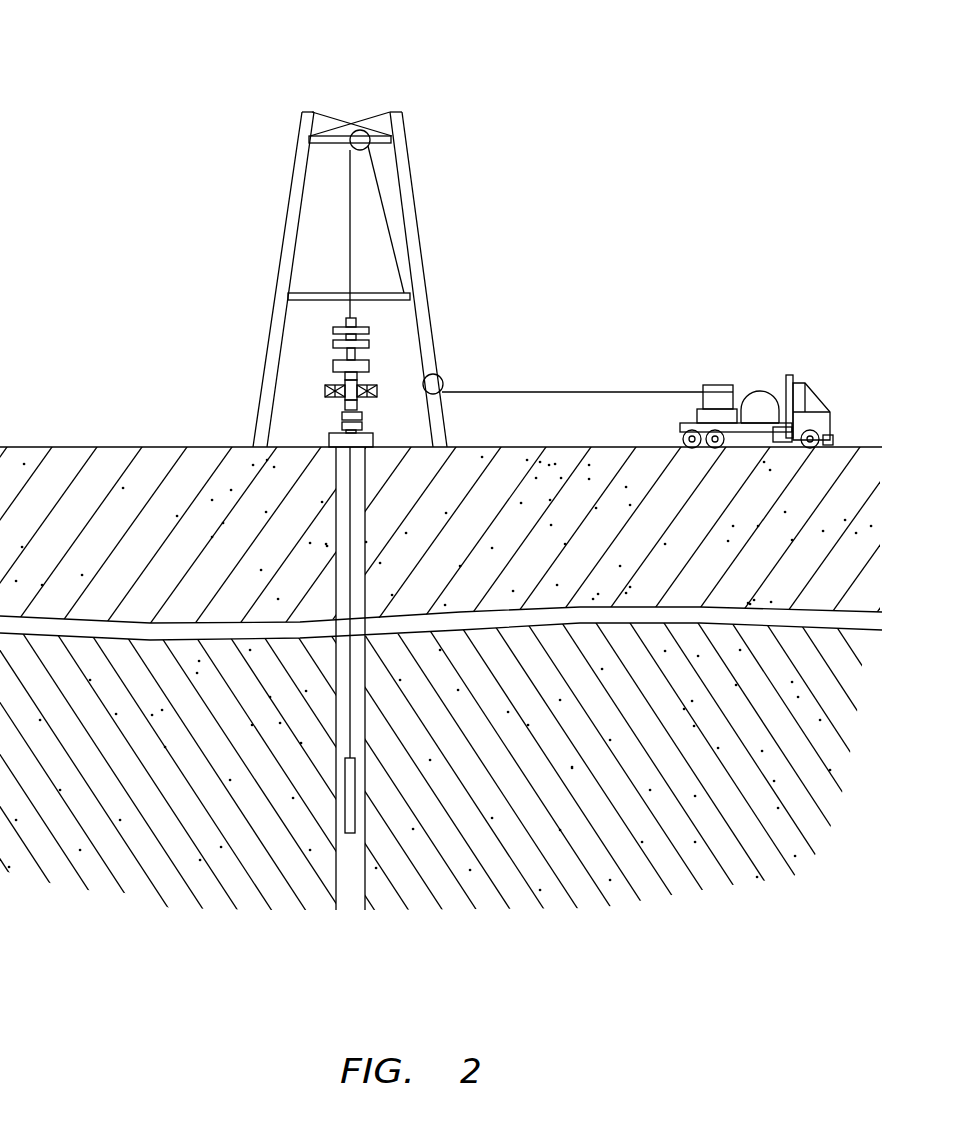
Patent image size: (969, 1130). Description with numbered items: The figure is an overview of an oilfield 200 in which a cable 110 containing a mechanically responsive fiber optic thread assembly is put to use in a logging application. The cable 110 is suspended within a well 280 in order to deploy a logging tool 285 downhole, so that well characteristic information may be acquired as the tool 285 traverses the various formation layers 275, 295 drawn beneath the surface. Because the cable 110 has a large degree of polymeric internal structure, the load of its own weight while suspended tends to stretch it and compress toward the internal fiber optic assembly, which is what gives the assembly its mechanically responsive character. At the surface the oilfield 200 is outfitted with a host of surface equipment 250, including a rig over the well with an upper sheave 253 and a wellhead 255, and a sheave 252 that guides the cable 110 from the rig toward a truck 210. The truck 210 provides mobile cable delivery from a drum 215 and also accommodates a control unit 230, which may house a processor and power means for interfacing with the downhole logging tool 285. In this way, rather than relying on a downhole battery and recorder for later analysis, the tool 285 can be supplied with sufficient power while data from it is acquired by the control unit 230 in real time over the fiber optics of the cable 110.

The surface equipment 250 is at (133, 62).
The crown sheave 253 is at (357, 130).
The wellhead stack 255 is at (316, 345).
The well 280 is at (341, 478).
The sheave 252 is at (442, 377).
The cable 110 is at (546, 392).
The control unit 230 is at (712, 385).
The drum 215 is at (757, 392).
The truck 210 is at (766, 372).
The oilfield 200 is at (60, 436).
The formation layer 275 is at (145, 549).
The formation layer 295 is at (725, 774).
The logging tool 285 is at (352, 817).